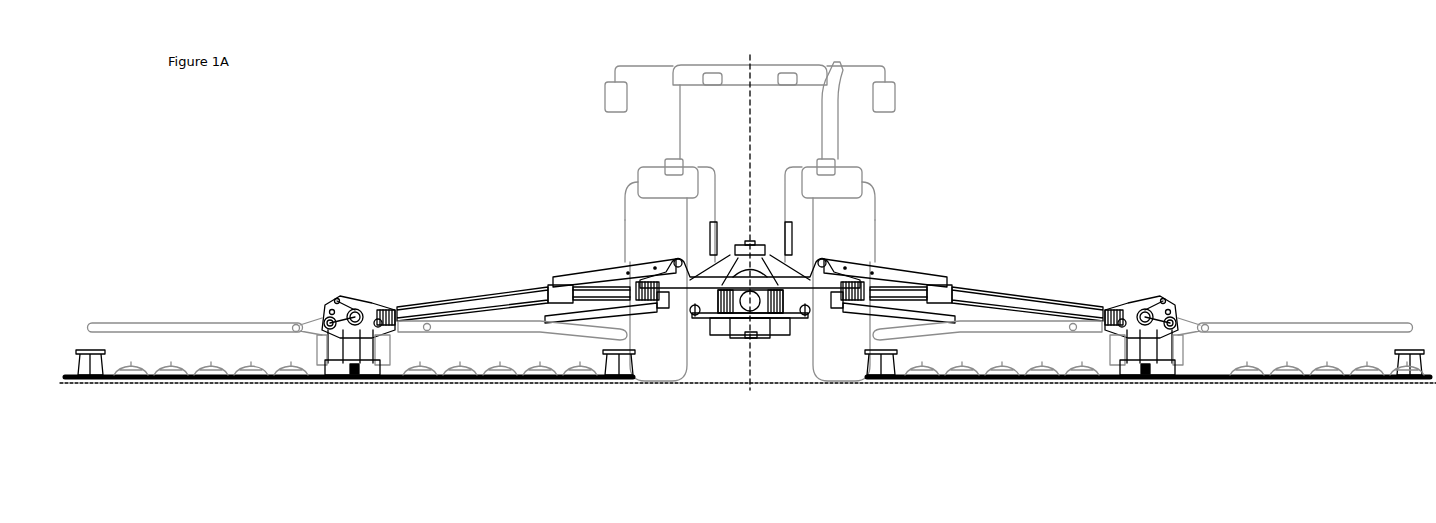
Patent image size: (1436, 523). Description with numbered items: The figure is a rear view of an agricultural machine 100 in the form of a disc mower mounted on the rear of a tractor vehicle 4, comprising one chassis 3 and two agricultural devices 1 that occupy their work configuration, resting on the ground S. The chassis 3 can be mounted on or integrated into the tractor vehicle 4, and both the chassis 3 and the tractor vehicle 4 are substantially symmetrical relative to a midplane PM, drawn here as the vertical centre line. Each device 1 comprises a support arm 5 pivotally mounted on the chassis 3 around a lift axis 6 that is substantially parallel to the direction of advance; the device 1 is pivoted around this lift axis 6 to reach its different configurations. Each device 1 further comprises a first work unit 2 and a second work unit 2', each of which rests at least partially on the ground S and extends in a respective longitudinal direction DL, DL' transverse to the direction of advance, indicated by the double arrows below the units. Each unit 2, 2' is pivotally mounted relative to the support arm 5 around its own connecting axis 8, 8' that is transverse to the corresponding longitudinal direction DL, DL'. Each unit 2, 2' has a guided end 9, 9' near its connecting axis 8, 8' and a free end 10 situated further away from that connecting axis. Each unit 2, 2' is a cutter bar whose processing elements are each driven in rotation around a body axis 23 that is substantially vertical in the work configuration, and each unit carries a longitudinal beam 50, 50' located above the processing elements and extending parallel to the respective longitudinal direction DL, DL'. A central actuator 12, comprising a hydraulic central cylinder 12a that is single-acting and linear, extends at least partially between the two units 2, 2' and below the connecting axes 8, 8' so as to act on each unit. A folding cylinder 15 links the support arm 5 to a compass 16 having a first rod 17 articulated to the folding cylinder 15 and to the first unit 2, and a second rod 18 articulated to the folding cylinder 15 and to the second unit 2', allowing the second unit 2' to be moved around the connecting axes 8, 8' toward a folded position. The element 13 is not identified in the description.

The agricultural machine 100 is at (468, 152).
The agricultural device 1 is at (475, 219).
The tractor vehicle 4 is at (876, 173).
The midplane PM is at (752, 140).
The ground S is at (731, 388).
The lift axis 6 is at (843, 303).
The chassis 3 is at (773, 313).
The upper link 13 is at (864, 272).
The support arm 5 is at (895, 284).
The longitudinal beam 50 is at (987, 305).
The longitudinal beam 50' is at (1295, 311).
The folding cylinder 15 is at (1118, 304).
The compass 16 is at (1186, 260).
The first rod 17 is at (1161, 302).
The second rod 18 is at (1170, 310).
The connecting axis 8 is at (1098, 337).
The connecting axis 8' is at (1192, 312).
The guided end 9 is at (1125, 378).
The guided end 9' is at (1169, 378).
The central actuator 12 is at (1147, 410).
The hydraulic central cylinder 12a is at (1138, 384).
The free end 10 is at (868, 394).
The first work unit 2 is at (751, 414).
The second work unit 2' is at (769, 414).
The body axis 23 is at (962, 378).
The longitudinal direction DL is at (497, 417).
The longitudinal direction DL' is at (200, 413).